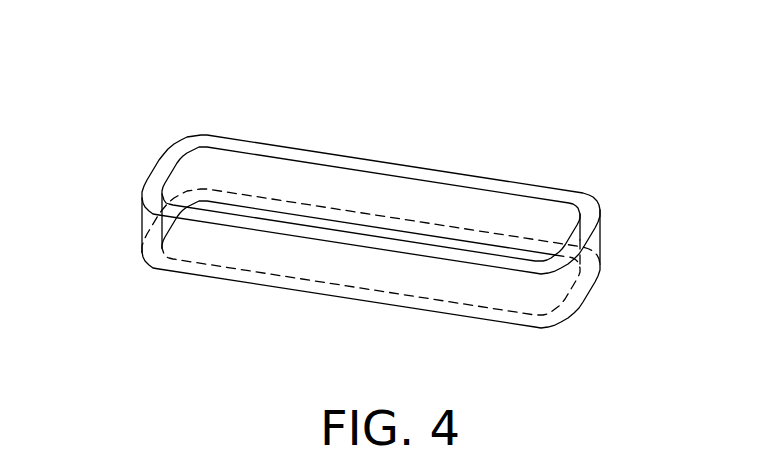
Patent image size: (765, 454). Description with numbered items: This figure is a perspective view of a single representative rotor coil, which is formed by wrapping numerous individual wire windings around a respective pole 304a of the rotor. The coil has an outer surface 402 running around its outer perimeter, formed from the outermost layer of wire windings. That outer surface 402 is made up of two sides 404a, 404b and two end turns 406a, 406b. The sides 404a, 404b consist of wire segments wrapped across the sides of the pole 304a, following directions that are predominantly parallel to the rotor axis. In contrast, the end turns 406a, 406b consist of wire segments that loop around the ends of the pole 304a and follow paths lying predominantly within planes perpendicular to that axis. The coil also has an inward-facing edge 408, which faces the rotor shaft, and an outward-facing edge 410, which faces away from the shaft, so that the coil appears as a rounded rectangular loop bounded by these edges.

The pole 304a is at (436, 120).
The outer surface 402 is at (181, 246).
The outer surface side 404a is at (437, 283).
The outer surface side 404b is at (269, 142).
The end turn 406a is at (598, 258).
The end turn 406b is at (160, 173).
The inward-facing edge 408 is at (323, 289).
The outward-facing edge 410 is at (502, 186).